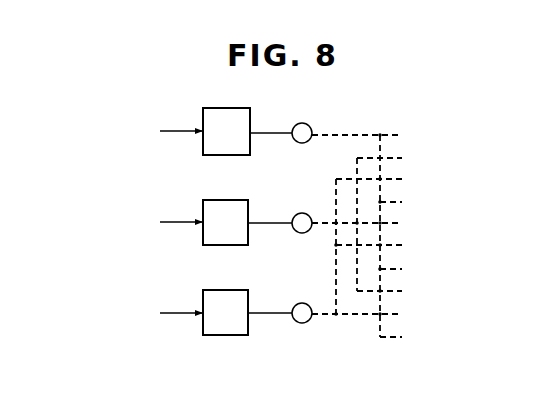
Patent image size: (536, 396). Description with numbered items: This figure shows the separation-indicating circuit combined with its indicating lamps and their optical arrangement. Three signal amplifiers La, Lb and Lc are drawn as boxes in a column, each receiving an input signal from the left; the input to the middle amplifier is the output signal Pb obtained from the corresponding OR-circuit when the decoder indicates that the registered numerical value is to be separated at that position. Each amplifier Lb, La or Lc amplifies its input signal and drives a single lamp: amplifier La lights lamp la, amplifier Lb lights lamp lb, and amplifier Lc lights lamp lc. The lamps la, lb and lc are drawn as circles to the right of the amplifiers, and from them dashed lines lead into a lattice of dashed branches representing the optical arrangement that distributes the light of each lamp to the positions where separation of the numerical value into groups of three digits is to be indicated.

The signal amplifier La is at (205, 131).
The signal amplifier Lb is at (204, 222).
The signal amplifier Lc is at (204, 312).
The lamp la is at (281, 123).
The lamp lb is at (280, 213).
The lamp lc is at (280, 303).
The output signal Pb is at (162, 221).